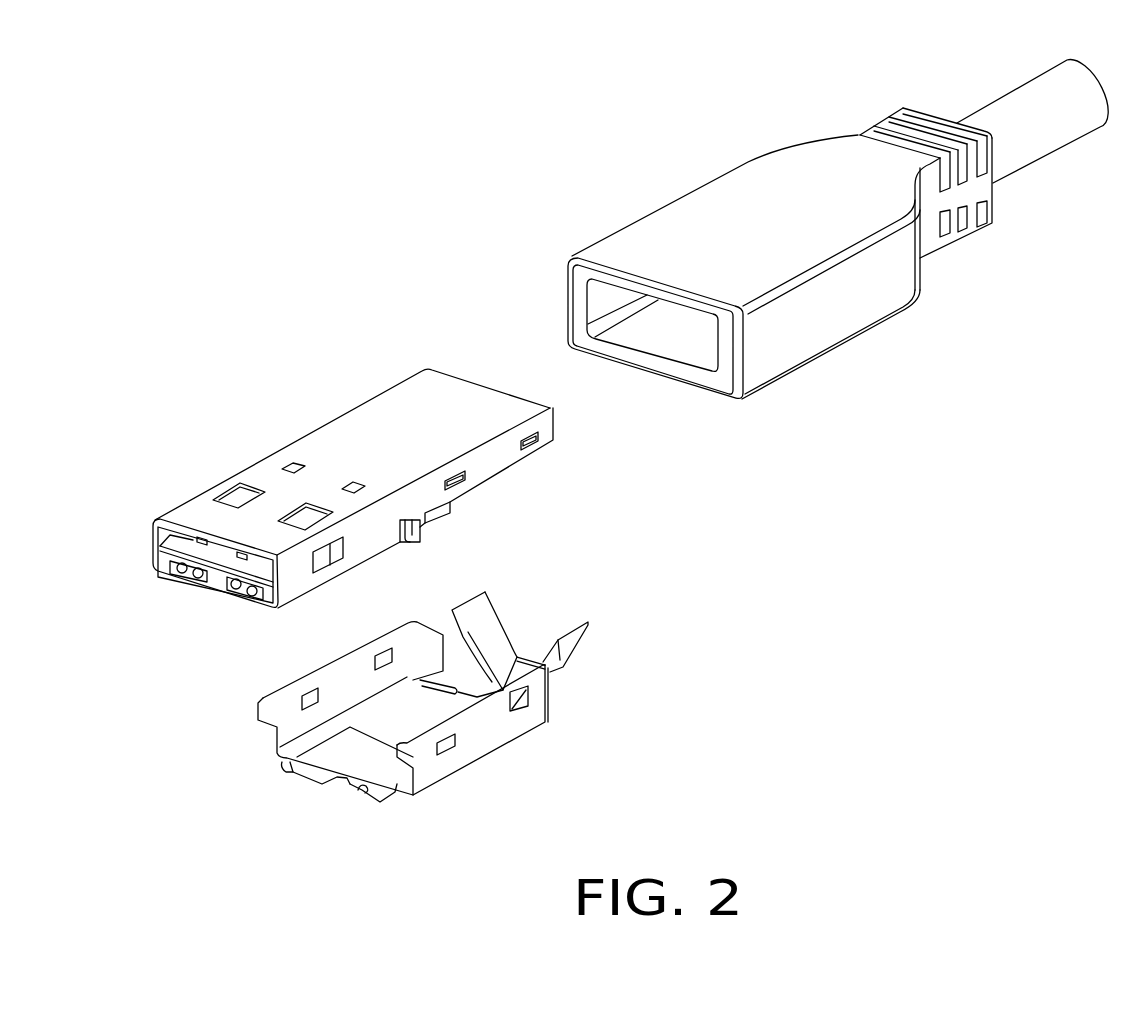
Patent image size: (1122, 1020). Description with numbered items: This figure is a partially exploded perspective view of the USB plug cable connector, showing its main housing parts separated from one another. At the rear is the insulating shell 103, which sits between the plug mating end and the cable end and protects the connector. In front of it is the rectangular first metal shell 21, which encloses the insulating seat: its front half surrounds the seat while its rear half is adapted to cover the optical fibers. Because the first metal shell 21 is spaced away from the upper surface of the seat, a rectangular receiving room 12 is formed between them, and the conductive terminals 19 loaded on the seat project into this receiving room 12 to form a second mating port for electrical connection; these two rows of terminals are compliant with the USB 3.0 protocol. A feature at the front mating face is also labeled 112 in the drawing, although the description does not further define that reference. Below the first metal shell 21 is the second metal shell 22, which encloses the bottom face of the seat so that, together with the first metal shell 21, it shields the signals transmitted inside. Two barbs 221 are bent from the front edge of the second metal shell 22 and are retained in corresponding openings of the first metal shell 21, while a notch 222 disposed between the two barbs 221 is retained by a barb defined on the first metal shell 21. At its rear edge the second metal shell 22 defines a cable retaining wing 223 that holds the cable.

The insulating shell 103 is at (720, 220).
The first metal shell 21 is at (372, 423).
The conductive terminals 19 is at (200, 540).
The receiving space 112 is at (187, 548).
The receiving room 12 is at (255, 567).
The second metal shell 22 is at (483, 733).
The cable retaining wing 223 is at (485, 625).
The notch 222 is at (332, 785).
The barbs 221 is at (365, 797).